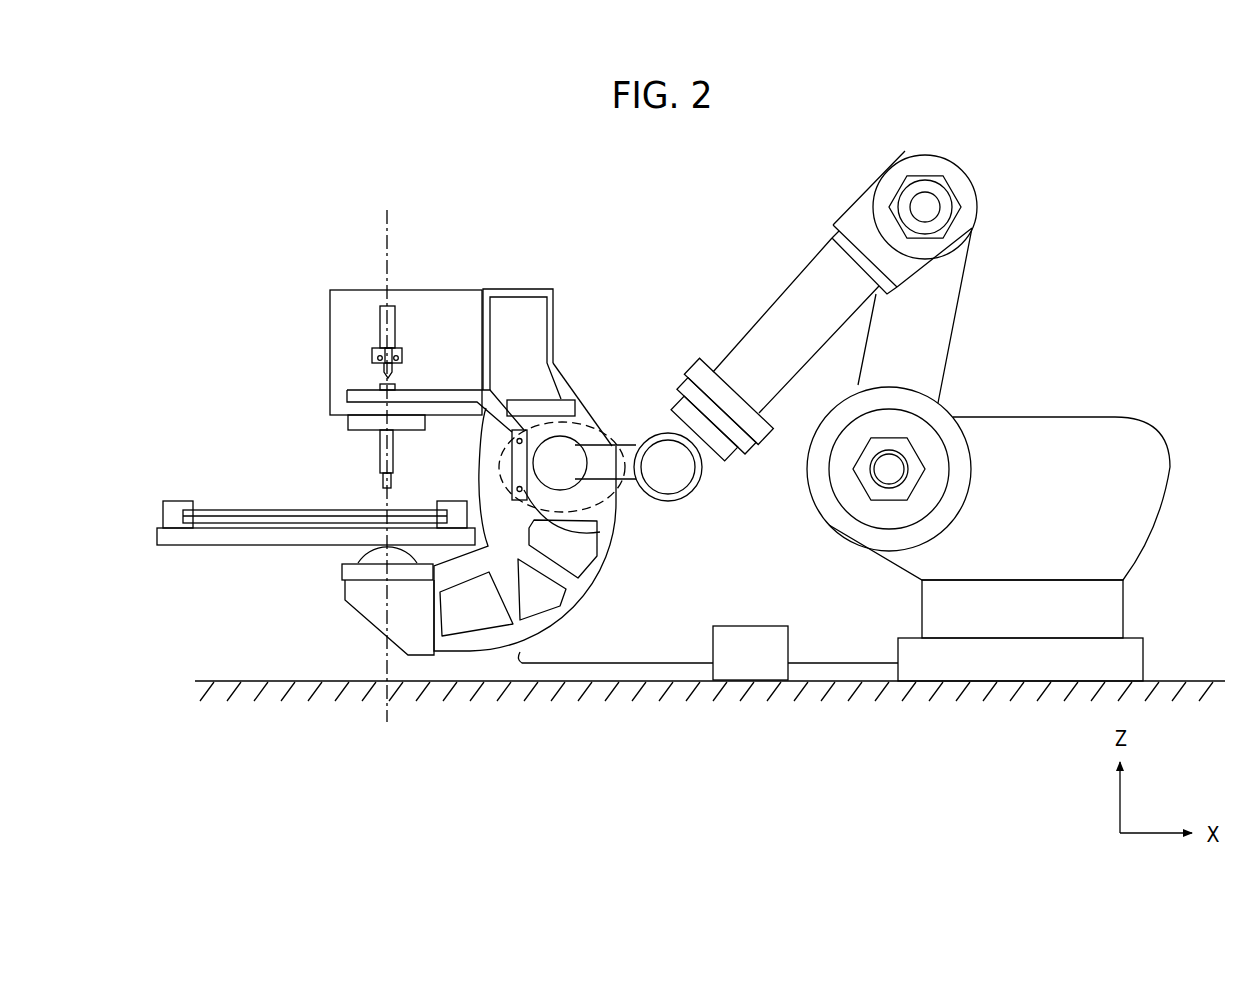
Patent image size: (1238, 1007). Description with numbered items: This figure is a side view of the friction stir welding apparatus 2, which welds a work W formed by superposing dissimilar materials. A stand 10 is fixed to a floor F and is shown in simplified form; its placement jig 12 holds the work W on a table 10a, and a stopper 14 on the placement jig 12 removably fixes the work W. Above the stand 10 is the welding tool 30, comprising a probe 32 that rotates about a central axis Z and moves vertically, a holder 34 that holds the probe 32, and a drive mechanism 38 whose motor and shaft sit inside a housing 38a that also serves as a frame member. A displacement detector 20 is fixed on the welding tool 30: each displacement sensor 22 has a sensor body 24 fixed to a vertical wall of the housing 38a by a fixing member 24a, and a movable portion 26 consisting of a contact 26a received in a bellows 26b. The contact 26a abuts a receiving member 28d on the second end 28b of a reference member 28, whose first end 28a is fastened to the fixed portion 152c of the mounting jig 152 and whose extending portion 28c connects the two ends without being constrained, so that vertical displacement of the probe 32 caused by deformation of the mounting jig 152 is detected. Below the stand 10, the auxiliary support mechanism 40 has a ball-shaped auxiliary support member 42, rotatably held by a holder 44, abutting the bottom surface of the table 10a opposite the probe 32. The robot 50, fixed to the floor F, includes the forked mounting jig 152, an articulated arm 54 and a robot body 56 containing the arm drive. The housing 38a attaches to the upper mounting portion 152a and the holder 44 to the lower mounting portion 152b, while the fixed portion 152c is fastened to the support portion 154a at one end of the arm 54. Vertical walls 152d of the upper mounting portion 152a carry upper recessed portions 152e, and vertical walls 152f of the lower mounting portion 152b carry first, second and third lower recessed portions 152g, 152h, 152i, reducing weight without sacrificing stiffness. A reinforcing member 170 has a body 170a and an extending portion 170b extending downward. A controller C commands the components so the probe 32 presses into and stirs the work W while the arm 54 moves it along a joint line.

The friction stir welding apparatus 2 is at (345, 250).
The stand 10 is at (270, 527).
The table 10a is at (300, 545).
The placement jig 12 is at (208, 546).
The stopper 14 is at (178, 500).
The displacement detector 20 is at (382, 343).
The displacement sensor 22 is at (370, 328).
The sensor body 24 is at (398, 322).
The fixing member 24a is at (403, 345).
The movable portion 26 is at (427, 368).
The contact 26a is at (447, 347).
The bellows 26b is at (402, 360).
The reference member 28 is at (445, 449).
The first end 28a is at (530, 482).
The second end 28b is at (345, 396).
The extending portion 28c is at (470, 392).
The receiving member 28d is at (378, 388).
The welding tool 30 is at (373, 318).
The probe 32 is at (402, 479).
The holder 34 is at (350, 428).
The drive mechanism 38 is at (422, 287).
The housing 38a is at (465, 300).
The auxiliary support mechanism 40 is at (355, 651).
The auxiliary support member 42 is at (362, 562).
The holder 44 is at (382, 620).
The robot 50 is at (912, 416).
The arm 54 is at (776, 278).
The robot body 56 is at (1123, 430).
The mounting jig 152 is at (581, 500).
The upper mounting portion 152a is at (566, 380).
The lower mounting portion 152b is at (588, 591).
The fixed portion 152c is at (625, 514).
The vertical wall 152d is at (553, 335).
The upper recessed portion 152e is at (527, 304).
The vertical wall 152f is at (545, 626).
The first lower recessed portion 152g is at (578, 549).
The second lower recessed portion 152h is at (542, 596).
The third lower recessed portion 152i is at (478, 628).
The support portion 154a is at (586, 443).
The reinforcing member 170 is at (600, 413).
The body 170a is at (580, 411).
The extending portion 170b is at (493, 560).
The work W is at (378, 507).
The central axis Z is at (389, 212).
The controller C is at (752, 638).
The floor F is at (1182, 680).